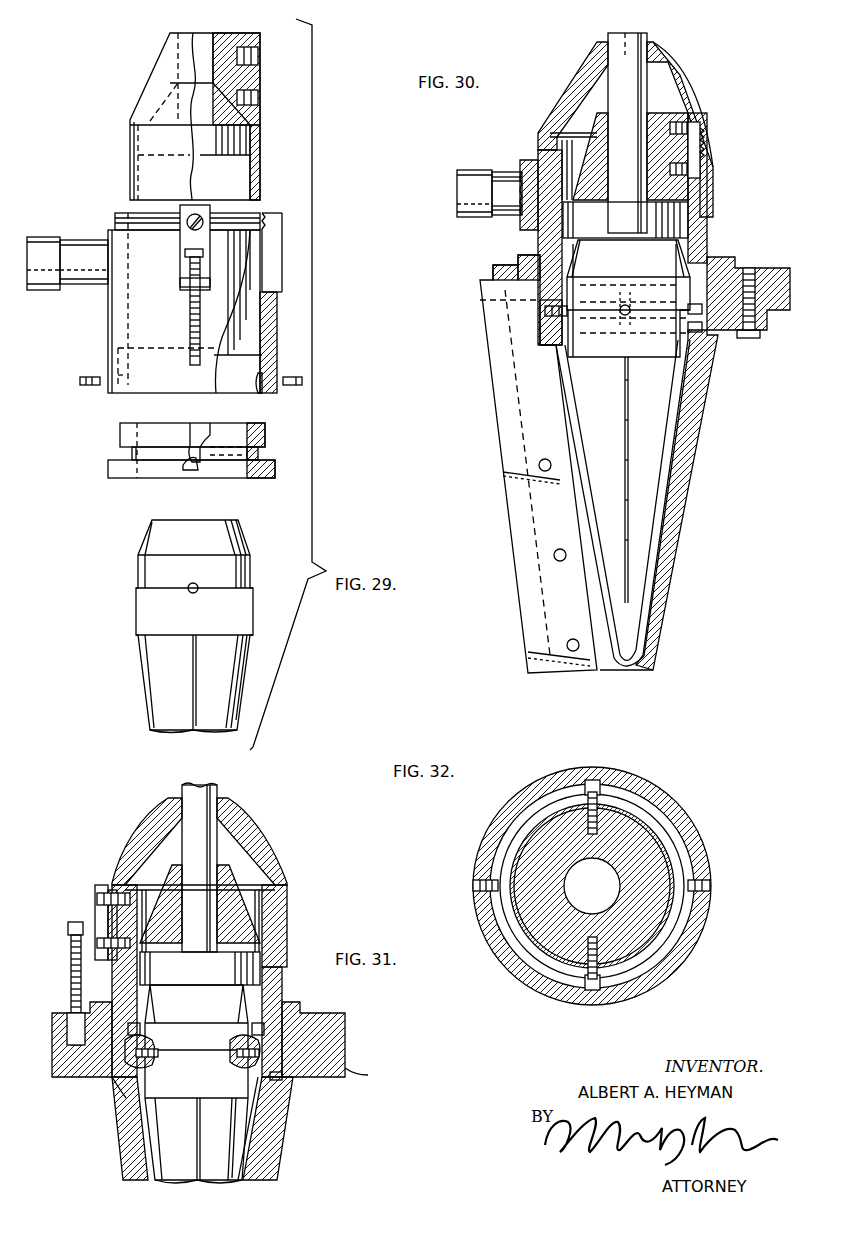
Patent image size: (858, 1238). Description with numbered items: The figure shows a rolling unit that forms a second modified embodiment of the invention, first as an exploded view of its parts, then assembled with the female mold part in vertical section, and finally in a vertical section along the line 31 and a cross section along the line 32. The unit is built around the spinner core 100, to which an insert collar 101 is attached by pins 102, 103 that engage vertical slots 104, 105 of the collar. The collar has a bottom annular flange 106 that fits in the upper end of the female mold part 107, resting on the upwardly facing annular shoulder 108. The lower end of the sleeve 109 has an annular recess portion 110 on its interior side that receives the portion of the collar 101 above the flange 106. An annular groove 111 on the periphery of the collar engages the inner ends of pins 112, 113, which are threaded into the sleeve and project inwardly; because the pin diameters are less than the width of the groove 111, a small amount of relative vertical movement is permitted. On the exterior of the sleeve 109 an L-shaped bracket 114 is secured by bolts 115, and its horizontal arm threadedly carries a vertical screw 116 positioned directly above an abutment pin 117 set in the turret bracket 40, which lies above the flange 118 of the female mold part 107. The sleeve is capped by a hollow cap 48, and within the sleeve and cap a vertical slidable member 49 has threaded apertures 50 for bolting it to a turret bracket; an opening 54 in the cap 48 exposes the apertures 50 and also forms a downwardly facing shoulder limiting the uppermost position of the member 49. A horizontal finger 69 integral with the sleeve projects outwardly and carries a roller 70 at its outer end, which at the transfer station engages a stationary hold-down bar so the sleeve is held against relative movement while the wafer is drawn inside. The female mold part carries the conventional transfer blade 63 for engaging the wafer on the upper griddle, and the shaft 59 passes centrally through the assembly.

In FIG. 30, the section line 31 is at (628, 14).
In FIG. 30, the section line 32 is at (528, 312).
In FIG. 30, the turret bracket 40 is at (726, 260).
In FIG. 31, the turret bracket 40 is at (340, 1040).
In FIG. 30, the hollow cap 48 is at (570, 78).
In FIG. 31, the hollow cap 48 is at (258, 845).
In FIG. 29, the vertical slidable member 49 is at (150, 85).
In FIG. 30, the vertical slidable member 49 is at (600, 125).
In FIG. 31, the vertical slidable member 49 is at (177, 868).
In FIG. 29, the threaded apertures 50 is at (253, 97).
In FIG. 30, the threaded apertures 50 is at (688, 130).
In FIG. 30, the opening 54 is at (695, 100).
In FIG. 30, the shaft 59 is at (640, 110).
In FIG. 31, the shaft 59 is at (207, 834).
In FIG. 32, the shaft 59 is at (598, 895).
In FIG. 30, the transfer blade 63 is at (500, 448).
In FIG. 29, the horizontal finger 69 is at (82, 240).
In FIG. 30, the horizontal finger 69 is at (501, 214).
In FIG. 29, the roller 70 is at (47, 238).
In FIG. 30, the roller 70 is at (470, 170).
In FIG. 29, the spinner core 100 is at (145, 658).
In FIG. 30, the spinner core 100 is at (664, 384).
In FIG. 31, the spinner core 100 is at (192, 1128).
In FIG. 32, the spinner core 100 is at (650, 928).
In FIG. 29, the insert collar 101 is at (160, 478).
In FIG. 31, the insert collar 101 is at (270, 1020).
In FIG. 32, the insert collar 101 is at (684, 872).
In FIG. 31, the pin 102 is at (232, 1050).
In FIG. 32, the pin 102 is at (598, 810).
In FIG. 29, the pin 103 is at (197, 593).
In FIG. 30, the pin 103 is at (620, 308).
In FIG. 31, the pin 103 is at (148, 1058).
In FIG. 32, the pin 103 is at (588, 968).
In FIG. 29, the vertical slot 104 is at (198, 466).
In FIG. 30, the vertical slot 104 is at (627, 274).
In FIG. 31, the vertical slot 104 is at (268, 1030).
In FIG. 32, the vertical slot 104 is at (600, 786).
In FIG. 29, the vertical slot 105 is at (200, 430).
In FIG. 31, the vertical slot 105 is at (140, 1030).
In FIG. 32, the vertical slot 105 is at (594, 992).
In FIG. 29, the bottom annular flange 106 is at (278, 478).
In FIG. 31, the bottom annular flange 106 is at (110, 1080).
In FIG. 30, the female mold part 107 is at (698, 452).
In FIG. 31, the female mold part 107 is at (286, 1118).
In FIG. 30, the upwardly facing annular shoulder 108 is at (548, 330).
In FIG. 31, the upwardly facing annular shoulder 108 is at (282, 1080).
In FIG. 29, the sleeve 109 is at (110, 327).
In FIG. 30, the sleeve 109 is at (625, 220).
In FIG. 31, the sleeve 109 is at (288, 920).
In FIG. 29, the annular recess portion 110 is at (270, 393).
In FIG. 31, the annular recess portion 110 is at (118, 1092).
In FIG. 29, the annular groove 111 is at (130, 459).
In FIG. 30, the annular groove 111 is at (690, 313).
In FIG. 32, the annular groove 111 is at (670, 913).
In FIG. 29, the pin 112 is at (97, 387).
In FIG. 30, the pin 112 is at (565, 314).
In FIG. 32, the pin 112 is at (476, 878).
In FIG. 29, the pin 113 is at (290, 374).
In FIG. 30, the pin 113 is at (690, 328).
In FIG. 32, the pin 113 is at (710, 886).
In FIG. 29, the L-shaped bracket 114 is at (182, 282).
In FIG. 31, the L-shaped bracket 114 is at (68, 960).
In FIG. 29, the bolts 115 is at (190, 226).
In FIG. 31, the bolts 115 is at (97, 903).
In FIG. 29, the vertical screw 116 is at (190, 318).
In FIG. 31, the vertical screw 116 is at (71, 995).
In FIG. 31, the abutment pin 117 is at (66, 1027).
In FIG. 30, the flange 118 is at (762, 330).
In FIG. 31, the flange 118 is at (367, 1076).
In FIG. 32, the flange 118 is at (700, 830).